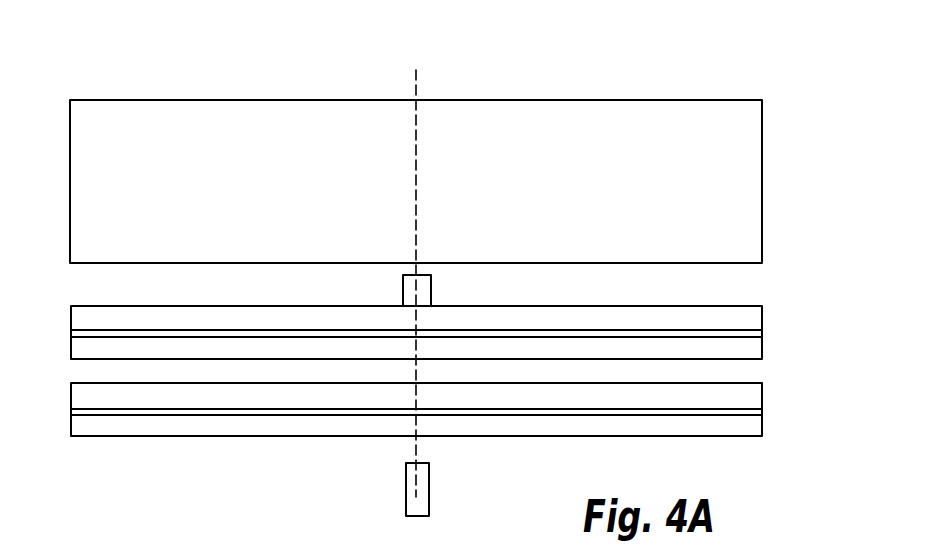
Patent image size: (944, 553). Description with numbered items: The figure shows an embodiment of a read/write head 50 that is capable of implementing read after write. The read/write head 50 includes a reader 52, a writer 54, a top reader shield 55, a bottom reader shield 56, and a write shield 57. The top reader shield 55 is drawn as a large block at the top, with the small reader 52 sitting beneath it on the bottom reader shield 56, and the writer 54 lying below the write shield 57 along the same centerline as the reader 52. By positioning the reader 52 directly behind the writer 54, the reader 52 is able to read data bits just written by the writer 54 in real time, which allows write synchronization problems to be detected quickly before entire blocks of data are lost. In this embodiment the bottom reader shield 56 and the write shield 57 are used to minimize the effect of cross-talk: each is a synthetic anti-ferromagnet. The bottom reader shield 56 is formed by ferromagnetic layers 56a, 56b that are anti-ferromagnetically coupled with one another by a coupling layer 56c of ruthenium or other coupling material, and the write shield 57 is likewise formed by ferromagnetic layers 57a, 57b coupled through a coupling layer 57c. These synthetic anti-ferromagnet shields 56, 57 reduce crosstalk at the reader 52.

The read/write head 50 is at (76, 71).
The reader 52 is at (431, 294).
The writer 54 is at (429, 485).
The top reader shield 55 is at (762, 178).
The bottom reader shield 56 is at (433, 306).
The ferromagnetic layer 56a is at (753, 312).
The ferromagnetic layer 56b is at (752, 348).
The coupling layer 56c is at (755, 333).
The write shield 57 is at (434, 409).
The ferromagnetic layer 57a is at (758, 400).
The ferromagnetic layer 57b is at (763, 435).
The coupling layer 57c is at (760, 407).